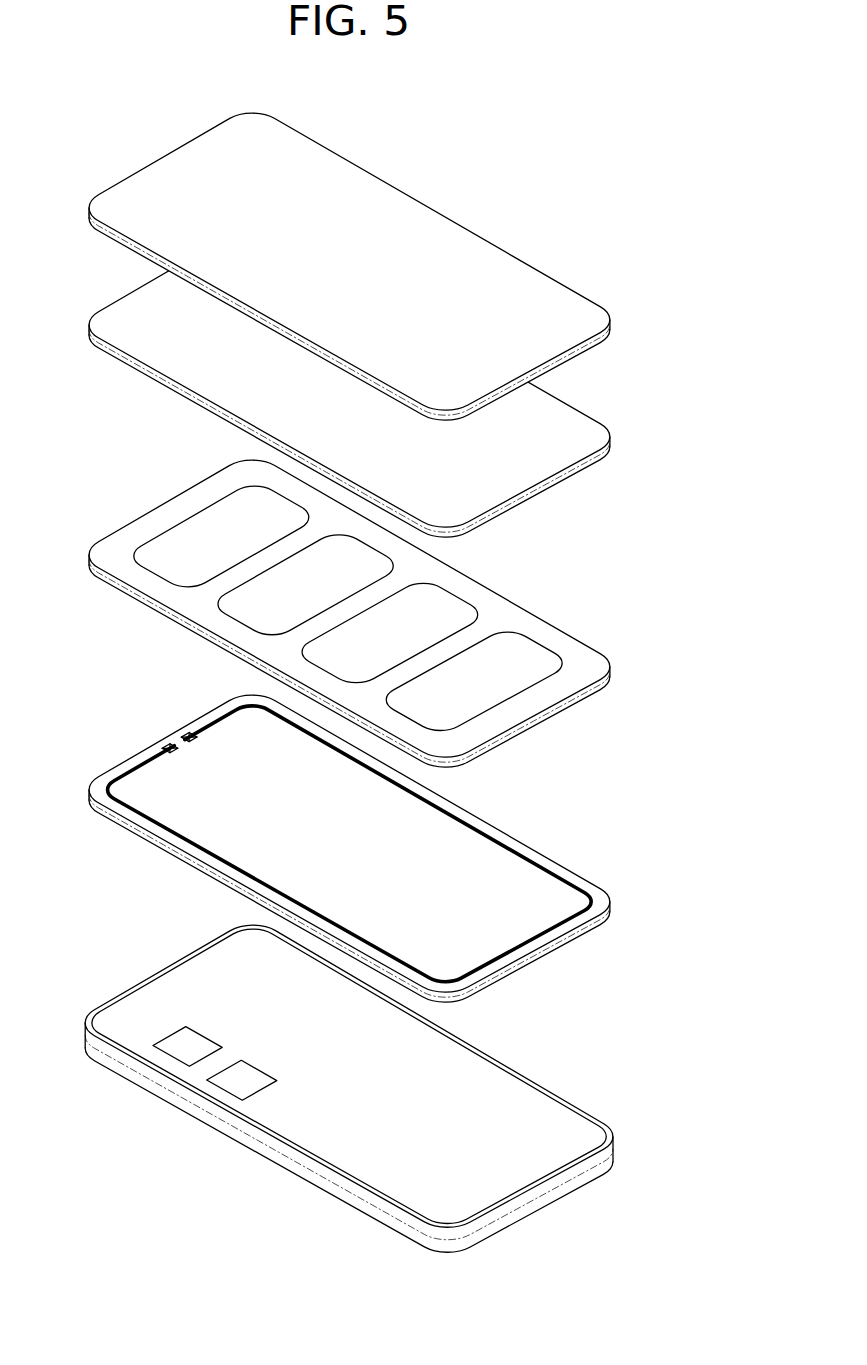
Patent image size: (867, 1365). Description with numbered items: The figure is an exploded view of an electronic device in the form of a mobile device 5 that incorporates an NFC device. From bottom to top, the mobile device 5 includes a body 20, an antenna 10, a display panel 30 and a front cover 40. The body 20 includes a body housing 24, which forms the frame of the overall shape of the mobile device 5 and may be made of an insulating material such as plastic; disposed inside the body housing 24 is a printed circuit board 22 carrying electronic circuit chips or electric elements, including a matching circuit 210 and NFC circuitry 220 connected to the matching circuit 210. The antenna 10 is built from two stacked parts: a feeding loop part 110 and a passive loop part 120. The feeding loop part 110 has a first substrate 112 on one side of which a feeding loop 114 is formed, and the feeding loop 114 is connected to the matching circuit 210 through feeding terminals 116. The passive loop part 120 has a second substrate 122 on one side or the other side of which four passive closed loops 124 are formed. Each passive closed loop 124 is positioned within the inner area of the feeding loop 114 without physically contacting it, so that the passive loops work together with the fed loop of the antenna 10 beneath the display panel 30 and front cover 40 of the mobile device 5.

The mobile device 5 is at (416, 125).
The antenna 10 is at (400, 731).
The body 20 is at (373, 1088).
The printed circuit board 22 is at (556, 1093).
The body housing 24 is at (577, 1177).
The display panel 30 is at (584, 428).
The front cover 40 is at (584, 305).
The feeding loop part 110 is at (378, 843).
The first substrate 112 is at (518, 837).
The feeding loop 114 is at (122, 774).
The feeding terminals 116 is at (165, 745).
The passive loop part 120 is at (379, 613).
The second substrate 122 is at (517, 599).
The passive closed loops 124 is at (160, 576).
The matching circuit 210 is at (203, 1036).
The NFC circuitry 220 is at (257, 1062).